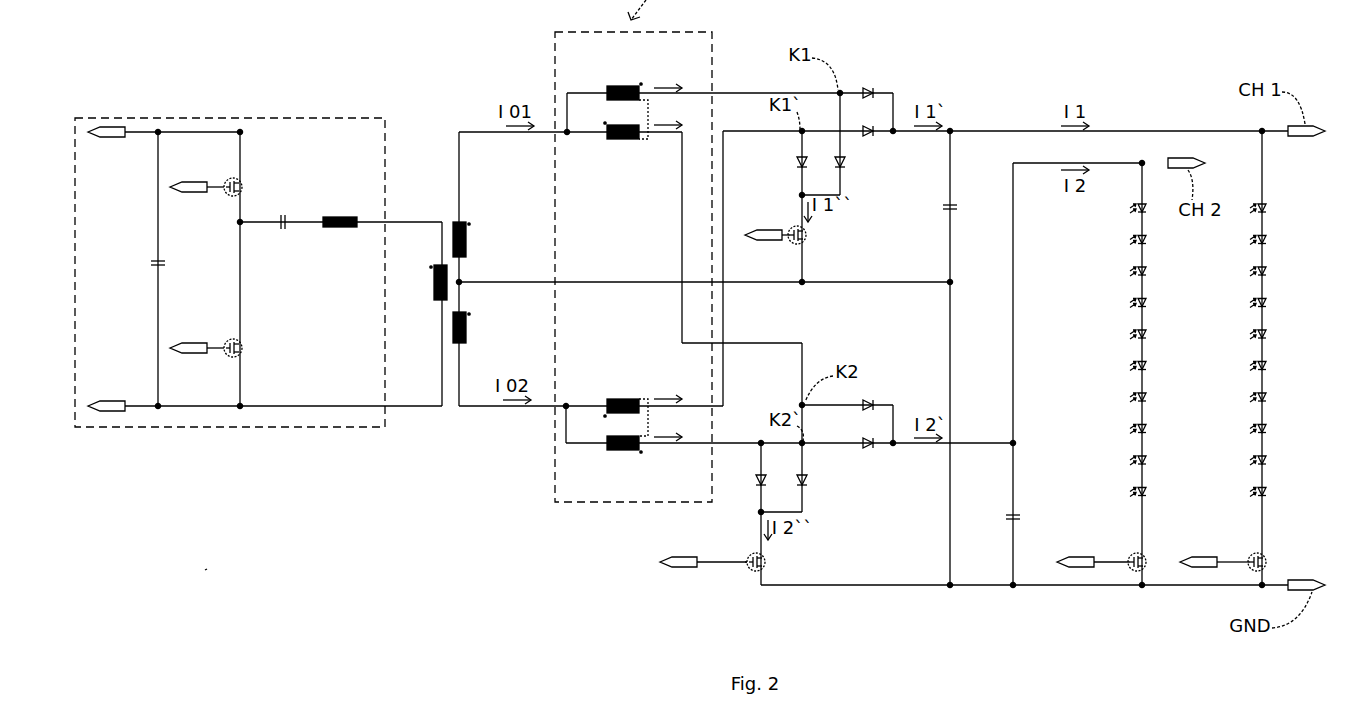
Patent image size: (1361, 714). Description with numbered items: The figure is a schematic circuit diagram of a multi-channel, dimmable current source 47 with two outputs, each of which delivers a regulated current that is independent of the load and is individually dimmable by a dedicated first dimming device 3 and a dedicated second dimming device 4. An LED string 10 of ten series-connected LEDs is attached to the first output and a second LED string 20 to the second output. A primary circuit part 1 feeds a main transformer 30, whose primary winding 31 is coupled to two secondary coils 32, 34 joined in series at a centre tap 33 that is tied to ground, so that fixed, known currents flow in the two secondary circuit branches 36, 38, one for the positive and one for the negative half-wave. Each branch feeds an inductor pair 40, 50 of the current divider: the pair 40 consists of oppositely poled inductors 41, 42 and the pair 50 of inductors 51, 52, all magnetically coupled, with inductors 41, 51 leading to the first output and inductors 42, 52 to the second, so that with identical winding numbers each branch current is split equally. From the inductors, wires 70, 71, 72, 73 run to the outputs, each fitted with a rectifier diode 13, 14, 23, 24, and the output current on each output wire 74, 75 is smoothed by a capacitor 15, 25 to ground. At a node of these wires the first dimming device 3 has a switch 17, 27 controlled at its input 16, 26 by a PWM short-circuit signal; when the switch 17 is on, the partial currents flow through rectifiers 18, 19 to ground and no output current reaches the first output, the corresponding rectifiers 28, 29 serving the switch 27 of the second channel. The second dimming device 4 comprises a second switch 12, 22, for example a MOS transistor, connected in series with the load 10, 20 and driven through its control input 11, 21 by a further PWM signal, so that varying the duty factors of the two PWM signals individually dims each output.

The primary circuit part 1 is at (214, 108).
The first dimming device 3 is at (891, 233).
The second dimming device 4 is at (1154, 552).
The LED string 10 is at (1280, 285).
The open1 control input 11 is at (1184, 560).
The second switch 12 is at (1249, 555).
The diode 13 is at (868, 88).
The diode 14 is at (870, 137).
The capacitor 15 is at (958, 209).
The input 16 is at (760, 228).
The switch 17 is at (808, 238).
The rectifier 18 is at (845, 165).
The rectifier 19 is at (798, 165).
The LED string 20 is at (1093, 332).
The open2 control input 21 is at (1060, 560).
The second switch 22 is at (1129, 555).
The diode 23 is at (868, 400).
The diode 24 is at (866, 438).
The capacitor 25 is at (1005, 518).
The input 26 is at (665, 576).
The switch 27 is at (766, 563).
The diode 28 is at (810, 485).
The diode 29 is at (755, 485).
The main transformer 30 is at (454, 272).
The primary winding 31 is at (432, 280).
The secondary coil 32 is at (468, 241).
The centre tap 33 is at (463, 285).
The secondary coil 34 is at (468, 331).
The circuit branch 36 is at (478, 130).
The circuit branch 38 is at (484, 410).
The inductor pair 40 is at (633, 267).
The inductor 41 is at (620, 84).
The inductor 42 is at (618, 142).
The current source 47 is at (205, 570).
The inductor pair 50 is at (605, 423).
The inductor 51 is at (620, 397).
The inductor 52 is at (615, 452).
The wire 70 is at (752, 90).
The wire 71 is at (770, 134).
The wire 72 is at (772, 340).
The wire 73 is at (726, 441).
The output wire 74 is at (988, 128).
The output wire 75 is at (968, 441).